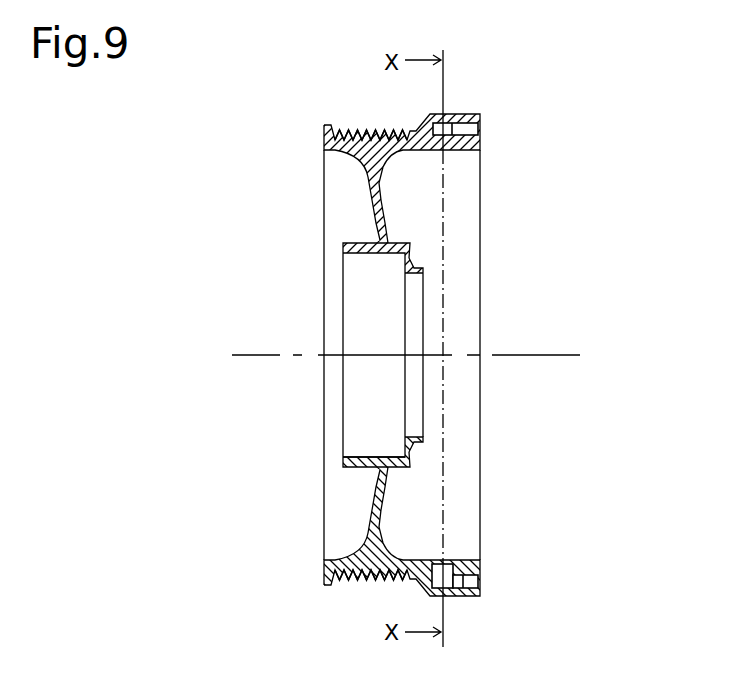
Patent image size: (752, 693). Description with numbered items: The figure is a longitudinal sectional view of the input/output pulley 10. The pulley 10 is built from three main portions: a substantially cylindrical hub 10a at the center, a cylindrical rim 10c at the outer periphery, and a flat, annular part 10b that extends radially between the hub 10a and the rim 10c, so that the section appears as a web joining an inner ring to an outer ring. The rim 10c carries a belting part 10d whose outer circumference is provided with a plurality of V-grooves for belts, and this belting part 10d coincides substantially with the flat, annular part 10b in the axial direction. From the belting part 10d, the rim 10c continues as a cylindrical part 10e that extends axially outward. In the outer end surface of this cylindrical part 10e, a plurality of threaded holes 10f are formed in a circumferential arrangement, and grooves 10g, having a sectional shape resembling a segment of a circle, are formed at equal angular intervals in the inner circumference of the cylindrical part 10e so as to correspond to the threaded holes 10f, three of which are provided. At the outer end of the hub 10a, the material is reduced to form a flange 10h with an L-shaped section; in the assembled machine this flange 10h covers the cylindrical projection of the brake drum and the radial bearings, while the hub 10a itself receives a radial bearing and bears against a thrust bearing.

The input/output pulley 10 is at (311, 101).
The hub 10a is at (357, 242).
The flat, annular part 10b is at (379, 200).
The cylindrical rim 10c is at (464, 317).
The belting part 10d is at (383, 131).
The cylindrical part 10e is at (468, 113).
The threaded holes 10f is at (489, 588).
The grooves 10g is at (452, 556).
The flange 10h is at (417, 265).